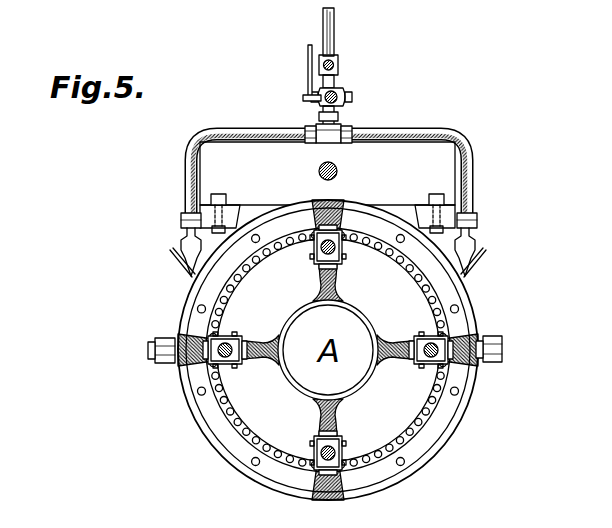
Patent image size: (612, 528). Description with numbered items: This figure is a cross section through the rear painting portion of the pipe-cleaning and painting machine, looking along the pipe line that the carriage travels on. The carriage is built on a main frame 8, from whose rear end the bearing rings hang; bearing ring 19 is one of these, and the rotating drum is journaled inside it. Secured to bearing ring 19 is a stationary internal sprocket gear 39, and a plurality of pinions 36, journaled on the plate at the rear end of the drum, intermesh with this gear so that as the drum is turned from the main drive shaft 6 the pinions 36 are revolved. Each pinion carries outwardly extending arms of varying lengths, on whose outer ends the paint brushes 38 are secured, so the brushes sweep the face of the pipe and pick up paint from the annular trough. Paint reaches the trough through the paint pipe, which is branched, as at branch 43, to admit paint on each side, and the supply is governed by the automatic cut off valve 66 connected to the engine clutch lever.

The main drive shaft 6 is at (344, 173).
The main frame 8 is at (327, 187).
The bearing ring 19 is at (508, 361).
The pinion 36 is at (422, 333).
The paint brush 38 is at (178, 373).
The internal sprocket gear 39 is at (413, 432).
The branch of paint pipe 43 is at (461, 146).
The automatic cut off valve 66 is at (333, 101).